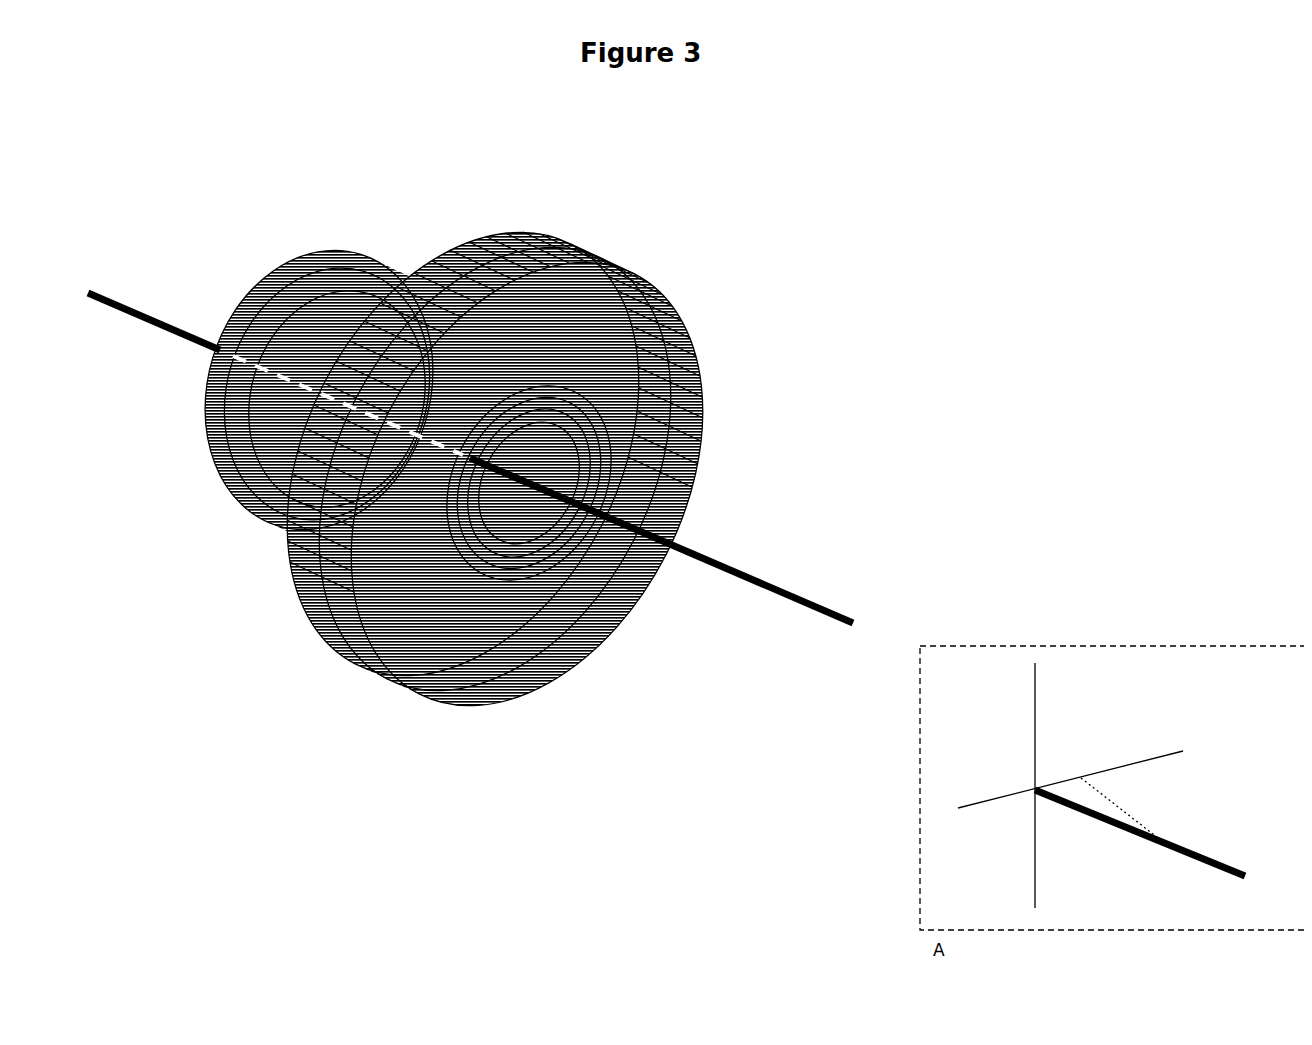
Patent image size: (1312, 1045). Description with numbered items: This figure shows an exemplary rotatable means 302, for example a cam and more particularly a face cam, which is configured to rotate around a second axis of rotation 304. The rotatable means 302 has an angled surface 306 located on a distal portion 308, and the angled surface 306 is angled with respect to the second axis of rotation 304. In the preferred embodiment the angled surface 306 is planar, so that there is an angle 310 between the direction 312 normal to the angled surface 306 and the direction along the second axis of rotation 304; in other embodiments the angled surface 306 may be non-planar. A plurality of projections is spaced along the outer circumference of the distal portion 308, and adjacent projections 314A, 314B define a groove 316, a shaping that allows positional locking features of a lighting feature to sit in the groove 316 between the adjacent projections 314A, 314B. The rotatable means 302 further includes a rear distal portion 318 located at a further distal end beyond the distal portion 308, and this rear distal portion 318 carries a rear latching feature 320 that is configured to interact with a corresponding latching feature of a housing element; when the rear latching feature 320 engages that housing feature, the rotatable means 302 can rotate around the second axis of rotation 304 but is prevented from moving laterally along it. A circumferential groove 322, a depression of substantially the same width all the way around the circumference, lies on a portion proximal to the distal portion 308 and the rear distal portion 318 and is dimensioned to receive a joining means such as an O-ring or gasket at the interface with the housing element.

The rotatable means 302 is at (656, 526).
The second axis of rotation 304 is at (795, 601).
The angled surface 306 is at (656, 410).
The distal portion 308 is at (658, 258).
The angle 310 is at (1042, 782).
The direction normal to the angled surface 312 is at (1132, 805).
The projection 314A is at (426, 235).
The projection 314B is at (443, 221).
The groove 316 is at (438, 231).
The rear distal portion 318 is at (186, 428).
The rear latching feature 320 is at (255, 287).
The circumferential groove 322 is at (262, 482).